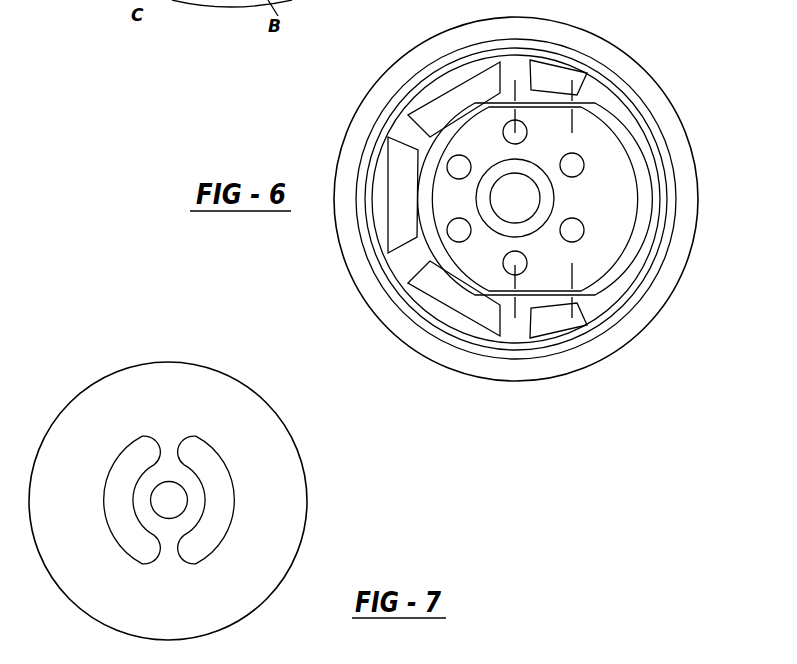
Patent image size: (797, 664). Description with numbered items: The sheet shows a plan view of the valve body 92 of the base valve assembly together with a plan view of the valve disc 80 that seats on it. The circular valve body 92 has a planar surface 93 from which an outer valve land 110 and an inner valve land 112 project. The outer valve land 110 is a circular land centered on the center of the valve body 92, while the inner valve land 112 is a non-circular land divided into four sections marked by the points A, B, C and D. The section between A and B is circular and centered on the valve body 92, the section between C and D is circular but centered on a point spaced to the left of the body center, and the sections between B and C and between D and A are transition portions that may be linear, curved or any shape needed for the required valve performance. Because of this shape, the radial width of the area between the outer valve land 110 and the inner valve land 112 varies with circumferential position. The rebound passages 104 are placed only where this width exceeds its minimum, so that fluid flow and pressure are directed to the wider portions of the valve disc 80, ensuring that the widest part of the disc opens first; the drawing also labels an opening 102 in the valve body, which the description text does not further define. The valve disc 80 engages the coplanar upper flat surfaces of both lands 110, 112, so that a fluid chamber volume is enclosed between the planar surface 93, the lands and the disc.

In FIG. 6, the valve body 92 is at (574, 370).
In FIG. 6, the planar surface 93 is at (460, 90).
In FIG. 6, the aperture 102 is at (574, 165).
In FIG. 6, the rebound passages 104 is at (392, 212).
In FIG. 6, the outer valve land 110 is at (386, 124).
In FIG. 6, the inner valve land 112 is at (637, 238).
In FIG. 7, the valve disc 80 is at (290, 503).
In FIG. 6, the section end point A is at (514, 291).
In FIG. 6, the section end point B is at (512, 107).
In FIG. 6, the section end point C is at (574, 107).
In FIG. 6, the section end point D is at (574, 291).